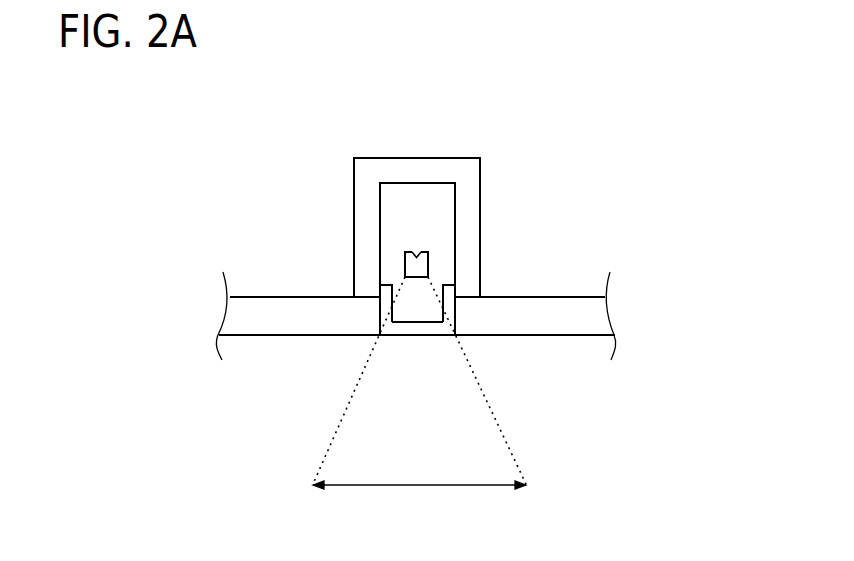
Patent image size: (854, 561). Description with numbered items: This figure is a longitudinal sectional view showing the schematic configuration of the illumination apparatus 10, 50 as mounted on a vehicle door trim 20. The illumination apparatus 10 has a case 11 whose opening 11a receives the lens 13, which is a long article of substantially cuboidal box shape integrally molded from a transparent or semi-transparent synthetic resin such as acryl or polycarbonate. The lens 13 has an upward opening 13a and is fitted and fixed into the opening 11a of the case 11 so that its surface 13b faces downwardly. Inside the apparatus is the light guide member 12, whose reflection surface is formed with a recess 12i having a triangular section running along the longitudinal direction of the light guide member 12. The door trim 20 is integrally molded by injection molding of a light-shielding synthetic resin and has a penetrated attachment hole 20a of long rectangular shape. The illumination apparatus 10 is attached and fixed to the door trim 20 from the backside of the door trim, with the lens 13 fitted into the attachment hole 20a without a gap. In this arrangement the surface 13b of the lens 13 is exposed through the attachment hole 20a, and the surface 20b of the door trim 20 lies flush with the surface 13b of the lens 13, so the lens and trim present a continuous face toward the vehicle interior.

The illumination apparatus 10 is at (690, 55).
The illumination apparatus 50 is at (728, 55).
The case 11 is at (378, 157).
The opening 11a is at (380, 258).
The light guide member 12 is at (407, 252).
The recess 12i is at (428, 254).
The lens 13 is at (401, 337).
The opening 13a is at (424, 337).
The surface 13b is at (444, 289).
The door trim 20 is at (259, 337).
The attachment hole 20a is at (384, 327).
The surface 20b is at (540, 337).